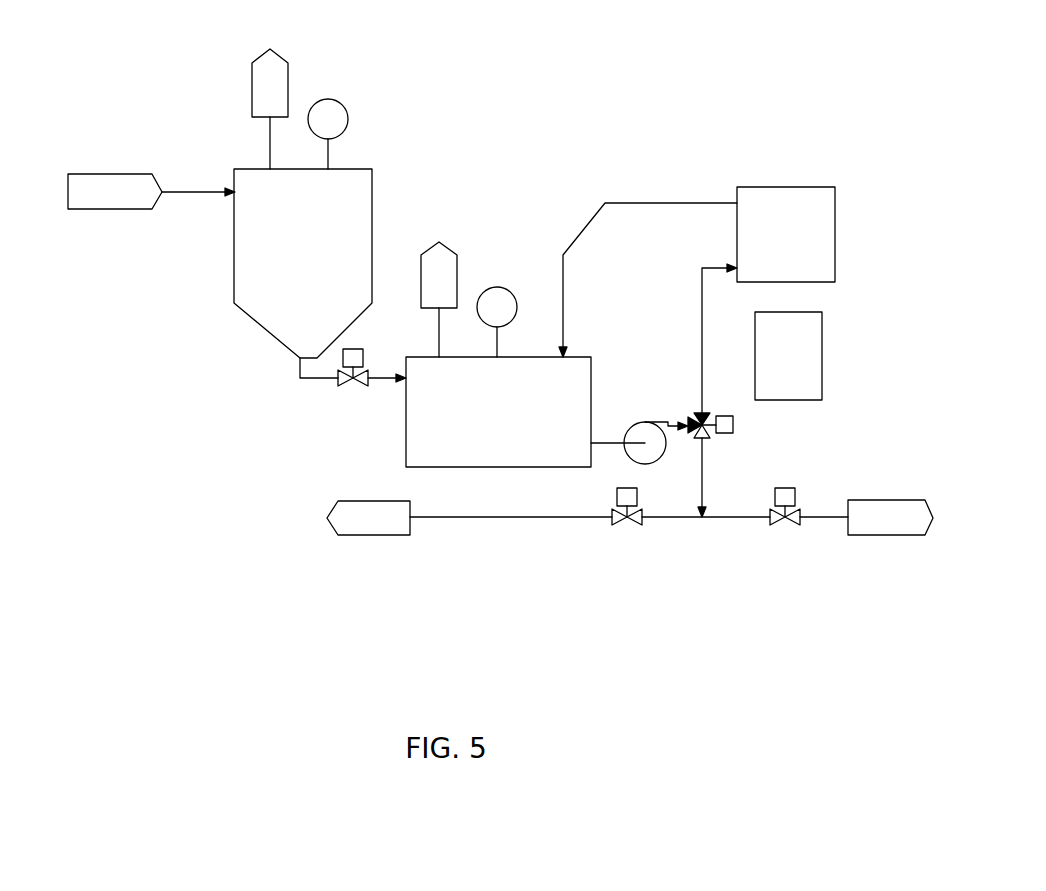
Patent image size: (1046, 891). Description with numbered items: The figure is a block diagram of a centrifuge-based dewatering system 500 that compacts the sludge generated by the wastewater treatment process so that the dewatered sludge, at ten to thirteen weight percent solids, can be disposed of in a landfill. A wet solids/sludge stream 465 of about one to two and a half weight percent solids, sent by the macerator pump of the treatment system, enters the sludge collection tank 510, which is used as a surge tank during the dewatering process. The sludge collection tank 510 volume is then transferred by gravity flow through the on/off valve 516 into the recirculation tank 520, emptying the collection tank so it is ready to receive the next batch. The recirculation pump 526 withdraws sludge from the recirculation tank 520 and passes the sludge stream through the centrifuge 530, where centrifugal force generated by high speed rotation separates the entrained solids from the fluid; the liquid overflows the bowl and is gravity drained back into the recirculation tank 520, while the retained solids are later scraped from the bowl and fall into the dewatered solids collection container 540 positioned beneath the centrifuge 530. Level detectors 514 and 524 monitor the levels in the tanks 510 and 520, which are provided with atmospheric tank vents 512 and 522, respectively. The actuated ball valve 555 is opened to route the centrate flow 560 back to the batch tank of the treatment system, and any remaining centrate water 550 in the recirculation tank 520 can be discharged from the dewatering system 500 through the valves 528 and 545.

The dewatering system 500 is at (633, 103).
The wet solids/sludge stream 465 is at (115, 175).
The sludge collection tank 510 is at (303, 263).
The atmospheric tank vent 512 is at (251, 95).
The level detector 514 is at (343, 118).
The on/off valve 516 is at (351, 387).
The recirculation tank 520 is at (498, 412).
The atmospheric tank vent 522 is at (440, 283).
The level detector 524 is at (498, 307).
The recirculation pump 526 is at (646, 428).
The valve 528 is at (729, 441).
The centrifuge 530 is at (786, 234).
The dewatered solids collection container 540 is at (788, 356).
The valve 545 is at (789, 526).
The centrate water 550 is at (890, 502).
The valve 555 is at (626, 524).
The centrate flow 560 is at (368, 501).